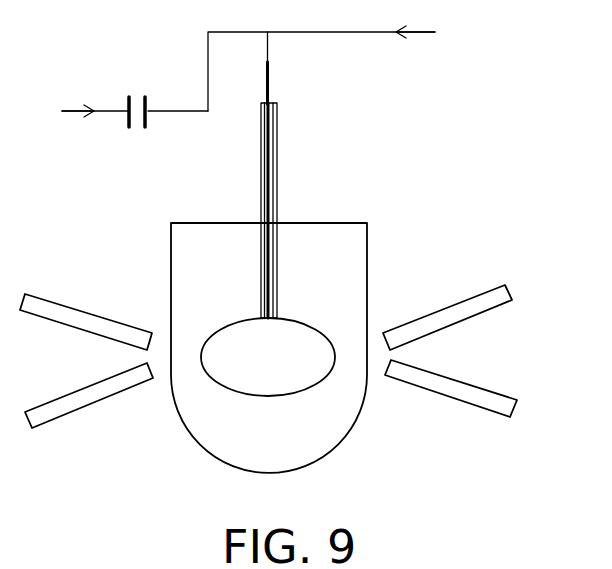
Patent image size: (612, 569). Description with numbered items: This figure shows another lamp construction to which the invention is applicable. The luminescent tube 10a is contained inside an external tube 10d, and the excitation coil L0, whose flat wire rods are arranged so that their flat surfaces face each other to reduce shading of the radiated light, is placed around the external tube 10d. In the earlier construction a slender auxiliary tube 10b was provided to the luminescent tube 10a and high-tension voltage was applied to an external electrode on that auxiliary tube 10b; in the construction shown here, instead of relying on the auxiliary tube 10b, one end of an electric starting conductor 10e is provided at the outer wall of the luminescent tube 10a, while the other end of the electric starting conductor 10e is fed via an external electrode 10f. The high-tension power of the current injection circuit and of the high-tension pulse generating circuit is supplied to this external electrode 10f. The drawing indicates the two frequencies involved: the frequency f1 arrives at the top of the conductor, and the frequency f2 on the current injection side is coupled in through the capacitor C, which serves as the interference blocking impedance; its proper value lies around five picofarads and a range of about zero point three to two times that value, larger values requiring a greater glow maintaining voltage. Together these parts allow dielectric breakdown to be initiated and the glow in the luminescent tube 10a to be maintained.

The luminescent tube 10a is at (325, 378).
The auxiliary tube 10b is at (278, 206).
The external tube 10d is at (368, 268).
The electric starting conductor 10e is at (273, 167).
The external electrode 10f is at (270, 88).
The excitation coil L0 is at (488, 385).
The capacitor C is at (141, 130).
The frequency f1 is at (432, 32).
The frequency f2 is at (63, 111).